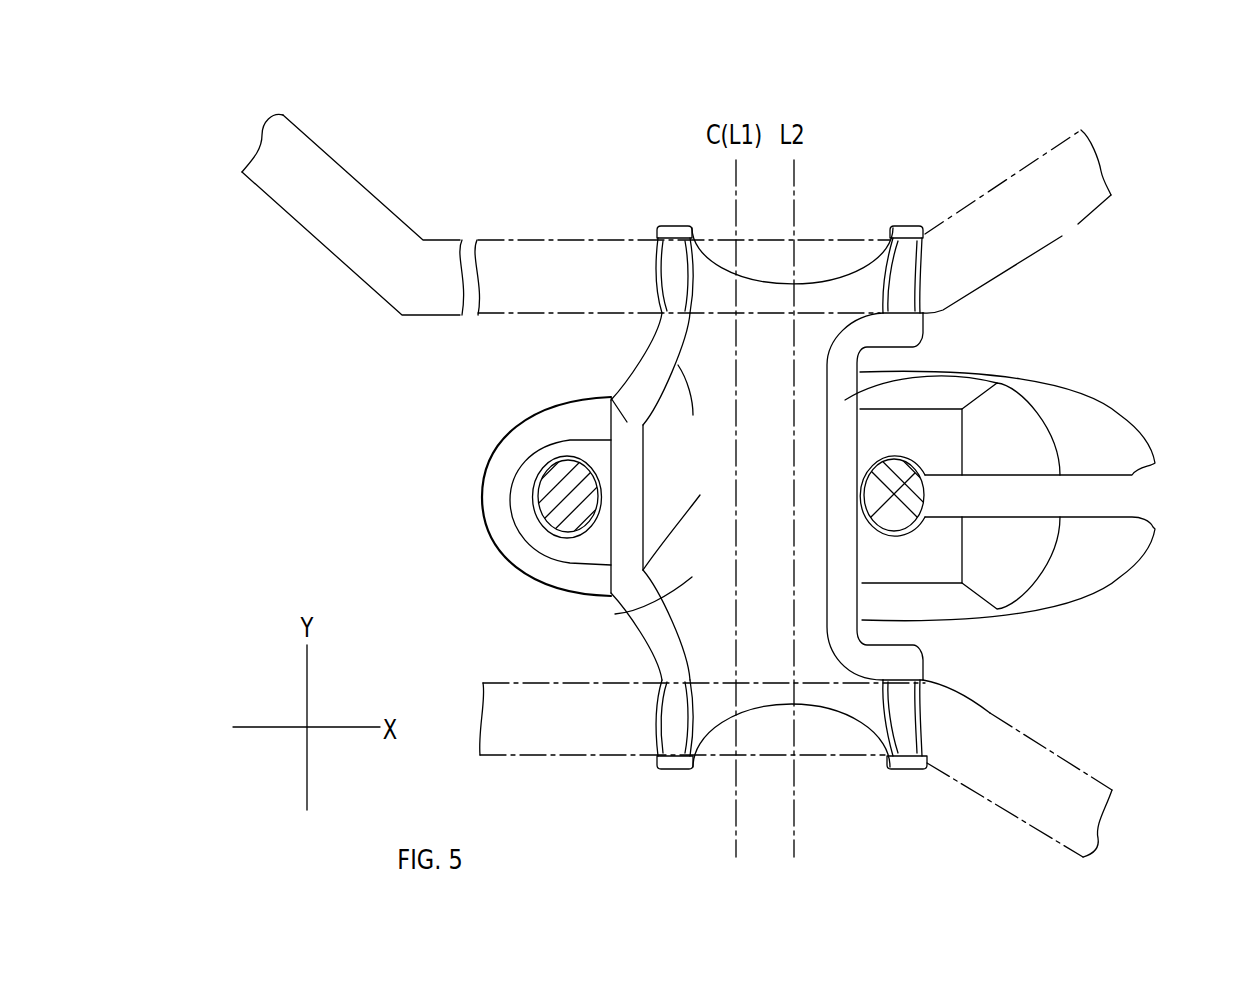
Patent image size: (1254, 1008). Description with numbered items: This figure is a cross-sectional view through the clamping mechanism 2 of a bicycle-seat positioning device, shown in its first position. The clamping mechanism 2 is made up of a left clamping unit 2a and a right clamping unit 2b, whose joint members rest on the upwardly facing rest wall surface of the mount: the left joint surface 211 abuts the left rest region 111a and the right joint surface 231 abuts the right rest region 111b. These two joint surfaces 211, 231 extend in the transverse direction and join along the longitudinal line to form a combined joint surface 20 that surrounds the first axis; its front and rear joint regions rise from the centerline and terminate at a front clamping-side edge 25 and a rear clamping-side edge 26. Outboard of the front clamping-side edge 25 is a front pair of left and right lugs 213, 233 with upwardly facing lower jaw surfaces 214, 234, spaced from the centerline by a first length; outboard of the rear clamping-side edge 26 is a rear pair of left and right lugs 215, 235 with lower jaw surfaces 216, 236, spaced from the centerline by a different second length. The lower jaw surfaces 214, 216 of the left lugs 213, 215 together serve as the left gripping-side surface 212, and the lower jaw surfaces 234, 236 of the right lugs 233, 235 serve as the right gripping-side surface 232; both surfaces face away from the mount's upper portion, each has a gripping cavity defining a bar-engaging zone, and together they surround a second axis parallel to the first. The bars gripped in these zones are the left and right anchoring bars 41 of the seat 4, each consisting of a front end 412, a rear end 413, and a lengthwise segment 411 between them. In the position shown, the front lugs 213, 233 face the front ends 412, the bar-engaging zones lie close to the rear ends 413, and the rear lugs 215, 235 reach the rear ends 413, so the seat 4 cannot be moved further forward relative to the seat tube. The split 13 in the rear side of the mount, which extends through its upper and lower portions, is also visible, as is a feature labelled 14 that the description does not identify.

The clamping mechanism 2 is at (922, 212).
The left clamping unit 2a is at (645, 646).
The right clamping unit 2b is at (613, 223).
The seat 4 is at (1066, 133).
The anchoring bar 41 is at (986, 192).
The lengthwise segment 411 is at (533, 253).
The front end 412 is at (377, 223).
The rear end 413 is at (1028, 187).
The split 13 is at (1087, 483).
The lever arm 14 is at (1125, 432).
The combined joint surface 20 is at (518, 572).
The front clamping-side edge 25 is at (611, 398).
The rear clamping-side edge 26 is at (845, 400).
The left joint surface 211 is at (615, 614).
The left rest region 111a is at (653, 595).
The left gripping-side surface 212 is at (868, 722).
The left lug 213 is at (697, 769).
The lower jaw surface 214 is at (682, 707).
The left lug 215 is at (910, 740).
The lower jaw surface 216 is at (908, 768).
The right joint surface 231 is at (678, 365).
The right rest region 111b is at (685, 390).
The right gripping-side surface 232 is at (865, 268).
The right lug 233 is at (695, 224).
The lower jaw surface 234 is at (675, 272).
The right lug 235 is at (866, 258).
The lower jaw surface 236 is at (905, 260).